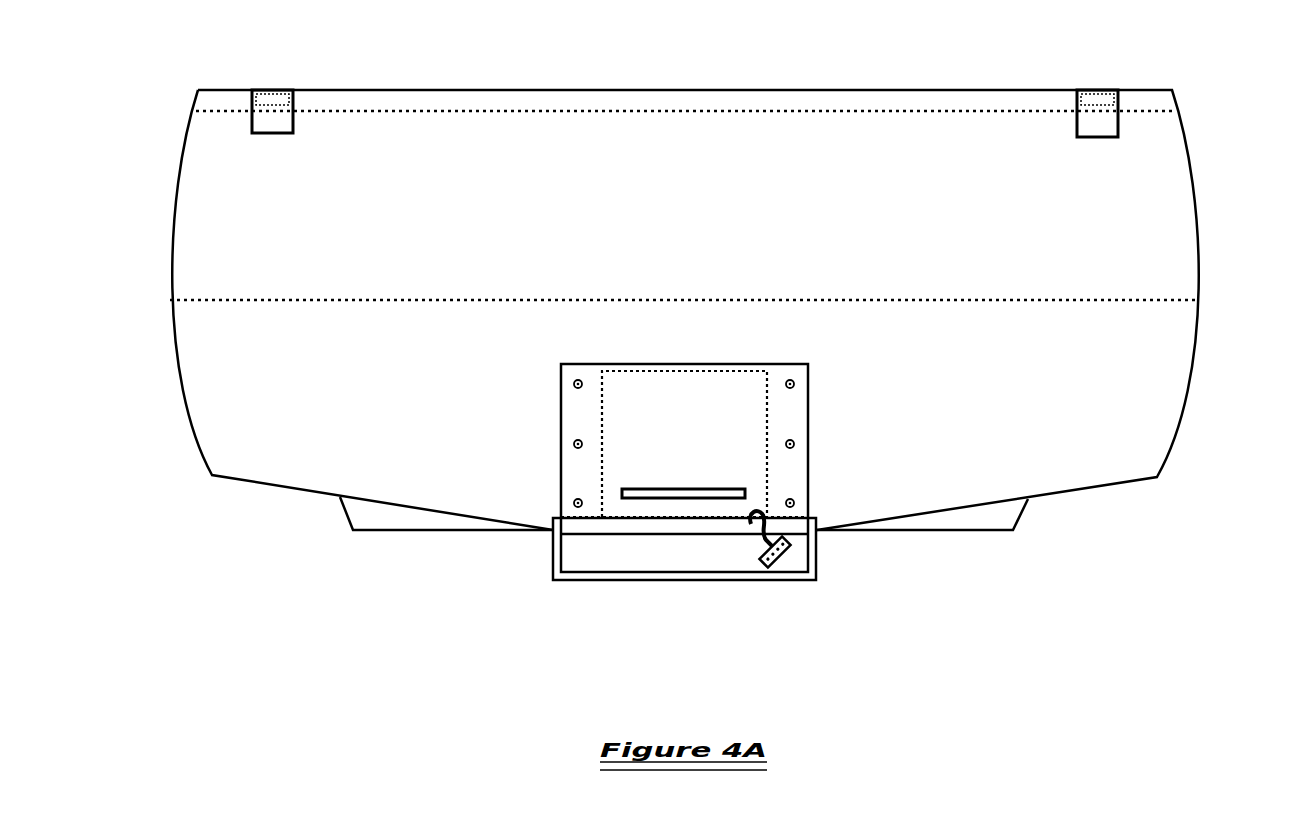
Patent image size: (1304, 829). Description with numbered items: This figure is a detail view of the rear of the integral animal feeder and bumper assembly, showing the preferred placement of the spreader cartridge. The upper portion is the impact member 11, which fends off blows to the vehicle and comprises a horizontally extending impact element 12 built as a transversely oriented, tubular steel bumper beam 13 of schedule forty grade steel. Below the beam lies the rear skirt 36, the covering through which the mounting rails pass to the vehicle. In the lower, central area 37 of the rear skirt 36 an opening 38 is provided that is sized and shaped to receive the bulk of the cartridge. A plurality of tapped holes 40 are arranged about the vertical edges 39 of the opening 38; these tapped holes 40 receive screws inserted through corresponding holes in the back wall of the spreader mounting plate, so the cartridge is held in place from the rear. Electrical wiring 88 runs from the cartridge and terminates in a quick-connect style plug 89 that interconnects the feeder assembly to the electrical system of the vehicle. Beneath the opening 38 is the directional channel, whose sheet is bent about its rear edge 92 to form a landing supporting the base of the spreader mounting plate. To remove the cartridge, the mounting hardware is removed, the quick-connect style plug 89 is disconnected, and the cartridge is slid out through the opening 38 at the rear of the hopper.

The impact member 11 is at (368, 158).
The horizontally extending impact element 12 is at (1131, 213).
The tubular steel bumper beam 13 is at (203, 231).
The rear skirt 36 is at (1102, 390).
The lower, central area 37 is at (522, 501).
The opening 38 is at (712, 382).
The vertical edges 39 is at (770, 417).
The tapped holes 40 is at (574, 384).
The electrical wiring 88 is at (756, 538).
The quick-connect style plug 89 is at (775, 560).
The rear edge 92 is at (575, 557).